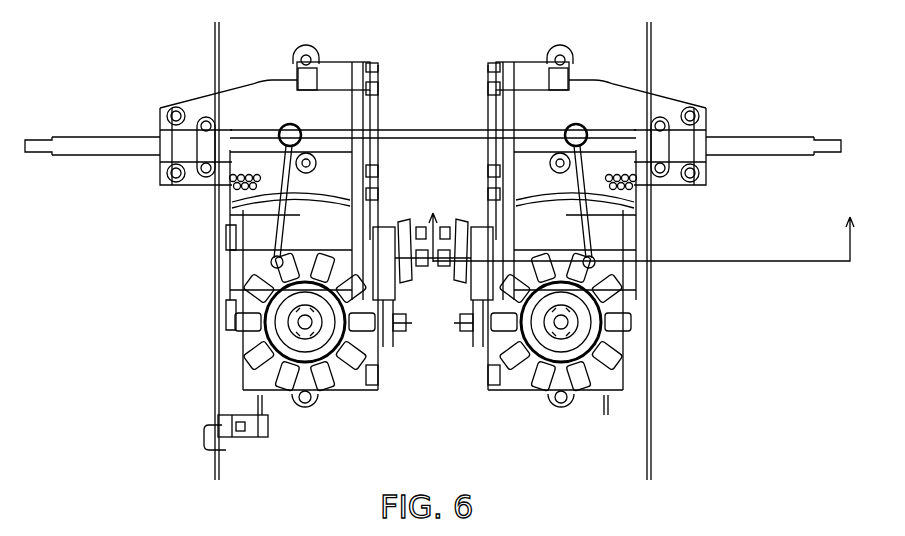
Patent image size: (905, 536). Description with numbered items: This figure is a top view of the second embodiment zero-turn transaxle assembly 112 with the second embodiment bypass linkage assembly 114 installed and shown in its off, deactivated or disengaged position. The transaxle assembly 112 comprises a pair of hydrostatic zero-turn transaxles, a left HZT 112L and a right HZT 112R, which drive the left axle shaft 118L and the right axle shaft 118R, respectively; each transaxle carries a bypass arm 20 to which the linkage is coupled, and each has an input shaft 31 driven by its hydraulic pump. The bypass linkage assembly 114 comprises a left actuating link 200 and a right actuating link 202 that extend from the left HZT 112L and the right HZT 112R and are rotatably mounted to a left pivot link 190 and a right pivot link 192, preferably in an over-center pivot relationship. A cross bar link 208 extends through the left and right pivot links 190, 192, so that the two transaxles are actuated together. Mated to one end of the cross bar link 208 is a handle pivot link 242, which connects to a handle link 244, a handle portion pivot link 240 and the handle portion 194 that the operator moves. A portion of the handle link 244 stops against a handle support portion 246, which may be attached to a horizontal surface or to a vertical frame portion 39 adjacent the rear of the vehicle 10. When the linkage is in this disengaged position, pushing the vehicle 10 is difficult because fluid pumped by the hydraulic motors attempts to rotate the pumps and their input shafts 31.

The vehicle 10 is at (642, 225).
The bypass arm 20 is at (240, 324).
The input shaft 31 is at (303, 323).
The vertical frame portion 39 is at (215, 383).
The zero-turn transaxle assembly 112 is at (98, 76).
The left HZT 112L is at (200, 104).
The right HZT 112R is at (672, 103).
The bypass linkage assembly 114 is at (422, 93).
The left axle shaft 118L is at (130, 160).
The right axle shaft 118R is at (737, 158).
The left pivot link 190 is at (283, 97).
The right pivot link 192 is at (583, 95).
The handle portion 194 is at (205, 440).
The left actuating link 200 is at (245, 196).
The right actuating link 202 is at (642, 200).
The cross bar link 208 is at (467, 130).
The handle portion pivot link 240 is at (250, 440).
The handle pivot link 242 is at (232, 117).
The handle link 244 is at (228, 236).
The handle support portion 246 is at (270, 421).